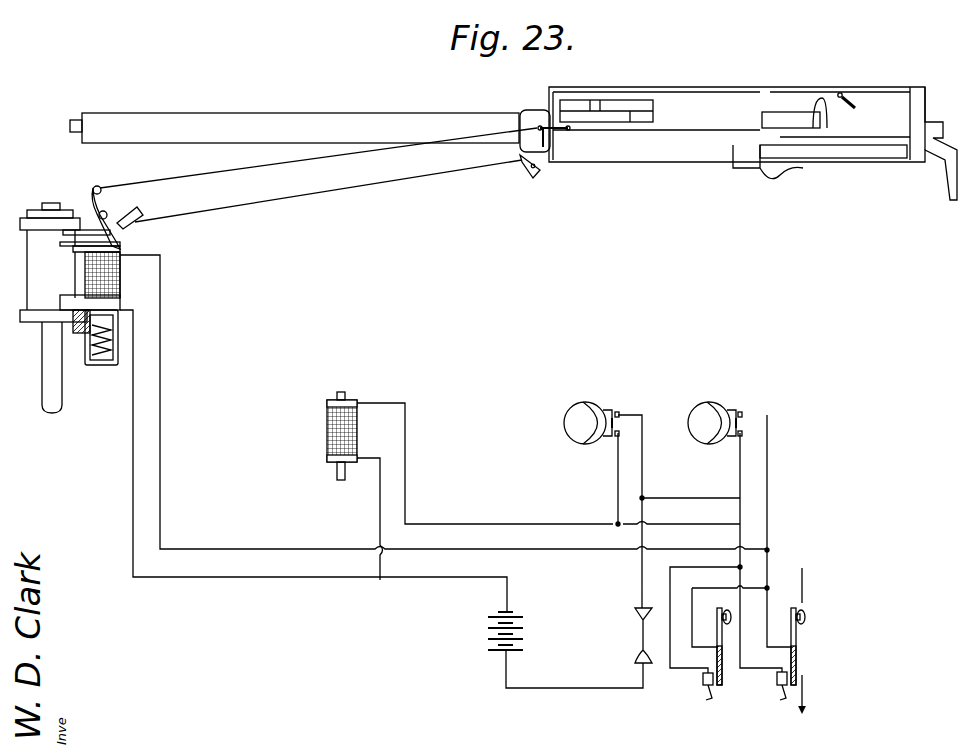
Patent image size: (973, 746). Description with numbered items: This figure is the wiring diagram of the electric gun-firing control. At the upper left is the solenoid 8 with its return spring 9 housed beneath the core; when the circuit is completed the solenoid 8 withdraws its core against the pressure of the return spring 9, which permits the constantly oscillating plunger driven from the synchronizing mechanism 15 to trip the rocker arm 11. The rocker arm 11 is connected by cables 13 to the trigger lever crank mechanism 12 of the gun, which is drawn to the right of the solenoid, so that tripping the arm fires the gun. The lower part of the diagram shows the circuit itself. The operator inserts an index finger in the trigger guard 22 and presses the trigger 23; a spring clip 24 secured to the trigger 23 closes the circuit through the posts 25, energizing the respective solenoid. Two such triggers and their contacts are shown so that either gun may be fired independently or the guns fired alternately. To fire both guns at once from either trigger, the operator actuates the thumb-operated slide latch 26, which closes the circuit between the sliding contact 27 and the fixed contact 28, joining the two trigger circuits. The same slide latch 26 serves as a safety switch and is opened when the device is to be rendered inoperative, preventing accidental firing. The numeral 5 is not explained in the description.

The solenoid casing 5 is at (35, 260).
The solenoid 8 is at (120, 243).
The return spring 9 is at (118, 355).
The rocker arm 11 is at (112, 207).
The trigger lever crank mechanism 12 is at (742, 88).
The cables 13 is at (340, 185).
The synchronizing mechanism 15 is at (327, 427).
The trigger guard 22 is at (572, 440).
The trigger 23 is at (605, 447).
The spring clip 24 is at (619, 413).
The posts 25 is at (622, 425).
The slide latch 26 is at (620, 433).
The sliding contact 27 is at (722, 664).
The fixed contact 28 is at (782, 700).